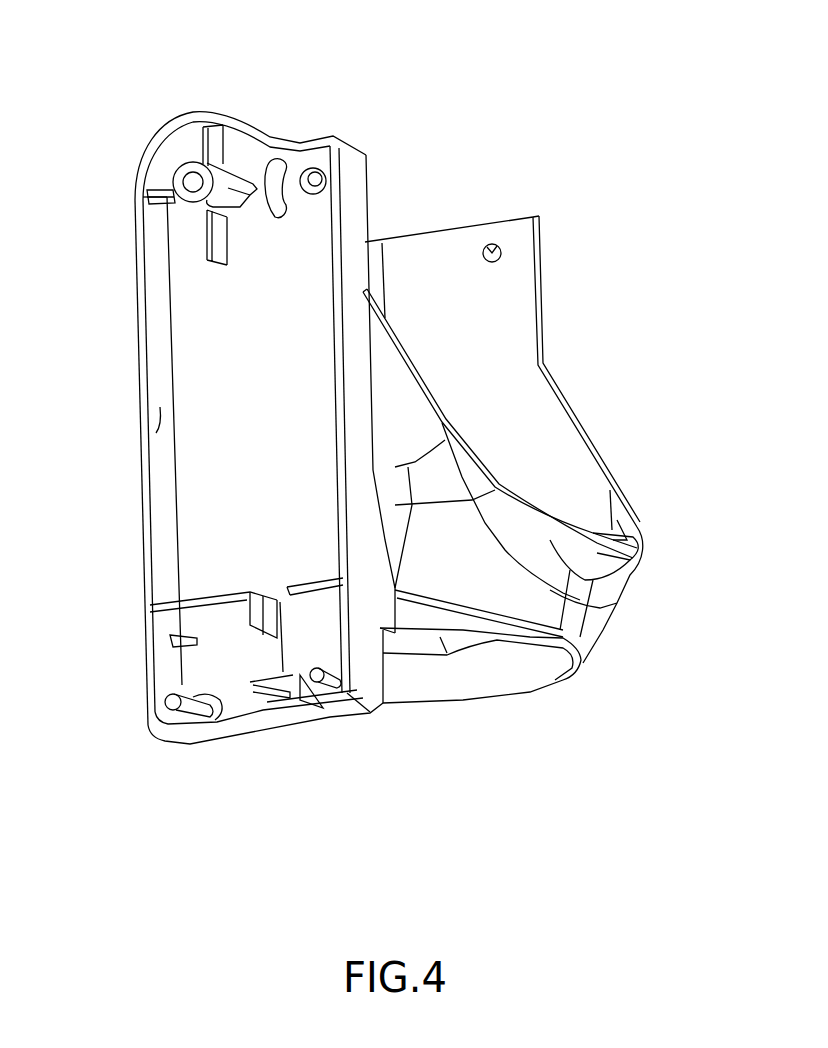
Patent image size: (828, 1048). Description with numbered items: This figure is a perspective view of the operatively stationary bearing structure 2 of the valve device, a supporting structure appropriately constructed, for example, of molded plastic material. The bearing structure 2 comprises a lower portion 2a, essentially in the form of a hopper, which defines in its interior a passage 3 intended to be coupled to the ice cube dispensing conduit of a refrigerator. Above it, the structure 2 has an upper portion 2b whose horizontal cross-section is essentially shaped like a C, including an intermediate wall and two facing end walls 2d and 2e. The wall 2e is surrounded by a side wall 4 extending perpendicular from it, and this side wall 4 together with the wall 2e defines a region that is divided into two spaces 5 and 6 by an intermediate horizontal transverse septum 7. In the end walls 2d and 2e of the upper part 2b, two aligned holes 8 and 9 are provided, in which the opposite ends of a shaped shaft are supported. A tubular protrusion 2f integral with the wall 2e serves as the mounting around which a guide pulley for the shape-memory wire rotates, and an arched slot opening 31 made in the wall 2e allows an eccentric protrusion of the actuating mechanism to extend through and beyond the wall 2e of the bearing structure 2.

The bearing structure 2 is at (583, 287).
The lower portion 2a is at (607, 590).
The upper portion 2b is at (453, 226).
The end wall 2d is at (412, 255).
The end wall 2e is at (197, 299).
The tubular protrusion 2f is at (183, 152).
The passage 3 is at (573, 517).
The side wall 4 is at (214, 112).
The space 5 is at (270, 426).
The space 6 is at (238, 667).
The intermediate horizontal transverse septum 7 is at (300, 580).
The hole 8 is at (503, 254).
The hole 9 is at (315, 168).
The arched slot opening 31 is at (280, 158).